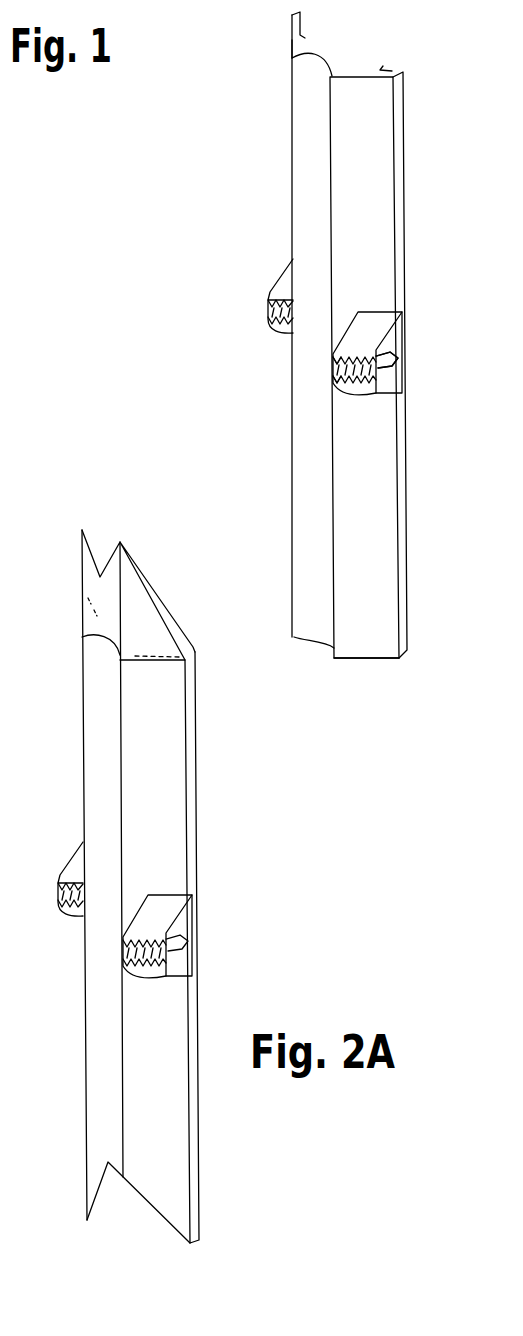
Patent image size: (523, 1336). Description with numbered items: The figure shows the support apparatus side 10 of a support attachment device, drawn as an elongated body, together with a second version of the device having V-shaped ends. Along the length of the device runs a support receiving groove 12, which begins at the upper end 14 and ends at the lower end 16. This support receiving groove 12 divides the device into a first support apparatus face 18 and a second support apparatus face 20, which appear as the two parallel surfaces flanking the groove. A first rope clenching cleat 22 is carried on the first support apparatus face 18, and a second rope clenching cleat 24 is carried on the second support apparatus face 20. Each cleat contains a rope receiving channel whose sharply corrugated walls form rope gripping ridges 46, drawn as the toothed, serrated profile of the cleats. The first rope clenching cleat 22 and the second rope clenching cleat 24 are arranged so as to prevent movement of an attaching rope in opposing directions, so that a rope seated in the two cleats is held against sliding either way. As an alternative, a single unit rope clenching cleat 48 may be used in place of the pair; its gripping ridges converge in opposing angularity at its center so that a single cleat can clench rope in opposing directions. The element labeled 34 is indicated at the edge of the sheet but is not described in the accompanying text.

In FIG. 1, the support apparatus side 10 is at (329, 374).
In FIG. 1, the support receiving groove 12 is at (234, 330).
In FIG. 1, the upper end 14 is at (290, 26).
In FIG. 2A, the upper end 14 is at (186, 648).
In FIG. 1, the lower end 16 is at (363, 660).
In FIG. 2A, the lower end 16 is at (193, 1228).
In FIG. 1, the first support apparatus face 18 is at (365, 159).
In FIG. 1, the second support apparatus face 20 is at (292, 46).
In FIG. 1, the first rope clenching cleat 22 is at (365, 330).
In FIG. 1, the second rope clenching cleat 24 is at (283, 286).
In FIG. 1, the support member 34 is at (522, 47).
In FIG. 1, the rope gripping ridges 46 is at (330, 377).
In FIG. 1, the single unit rope clenching cleat 48 is at (397, 362).